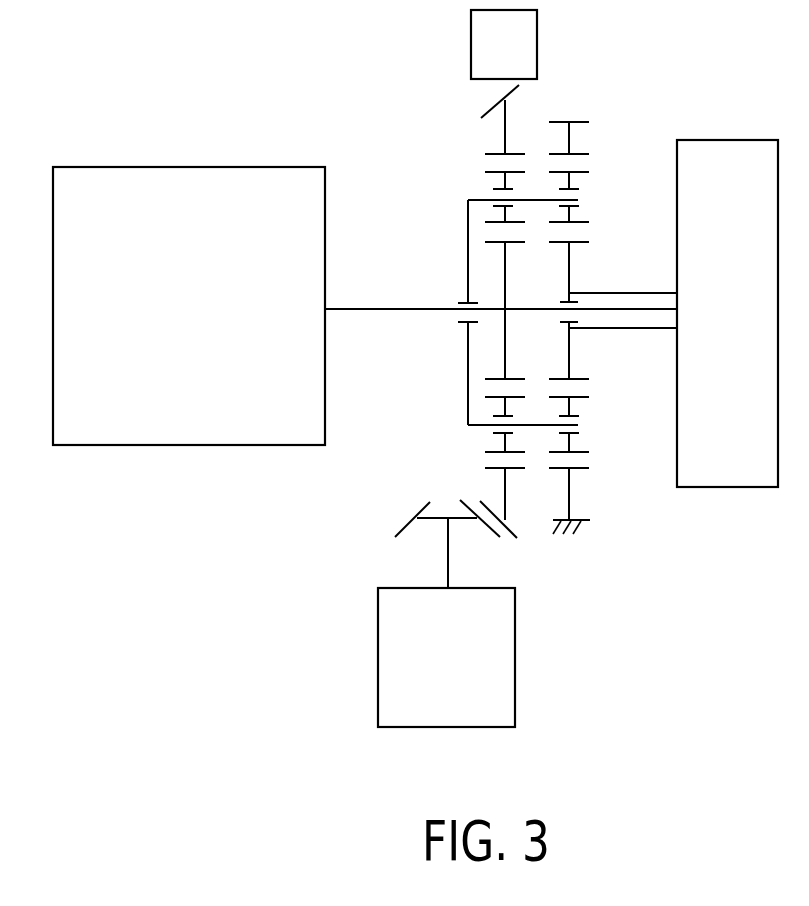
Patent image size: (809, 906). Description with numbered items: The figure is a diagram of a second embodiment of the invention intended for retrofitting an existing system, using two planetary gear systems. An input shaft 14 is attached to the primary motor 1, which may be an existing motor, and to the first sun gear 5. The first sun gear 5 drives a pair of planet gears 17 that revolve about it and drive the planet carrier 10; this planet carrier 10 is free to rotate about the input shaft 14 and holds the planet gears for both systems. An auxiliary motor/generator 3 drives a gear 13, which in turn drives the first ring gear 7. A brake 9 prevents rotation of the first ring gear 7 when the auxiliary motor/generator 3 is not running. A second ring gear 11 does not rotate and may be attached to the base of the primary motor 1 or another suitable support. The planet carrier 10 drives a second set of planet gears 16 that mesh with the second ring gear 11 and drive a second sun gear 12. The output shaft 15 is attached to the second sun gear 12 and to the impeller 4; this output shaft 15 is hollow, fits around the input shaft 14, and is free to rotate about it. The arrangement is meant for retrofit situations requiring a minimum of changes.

The primary motor 1 is at (189, 306).
The auxiliary motor/generator 3 is at (446, 657).
The impeller 4 is at (727, 313).
The first sun gear 5 is at (528, 312).
The first ring gear 7 is at (487, 311).
The brake 9 is at (504, 44).
The planet carrier 10 is at (449, 312).
The second ring gear 11 is at (595, 331).
The second sun gear 12 is at (618, 350).
The gear 13 is at (417, 545).
The input shaft 14 is at (501, 329).
The output shaft 15 is at (623, 276).
The second set of planet gears 16 is at (593, 312).
The planet gears 17 is at (489, 311).